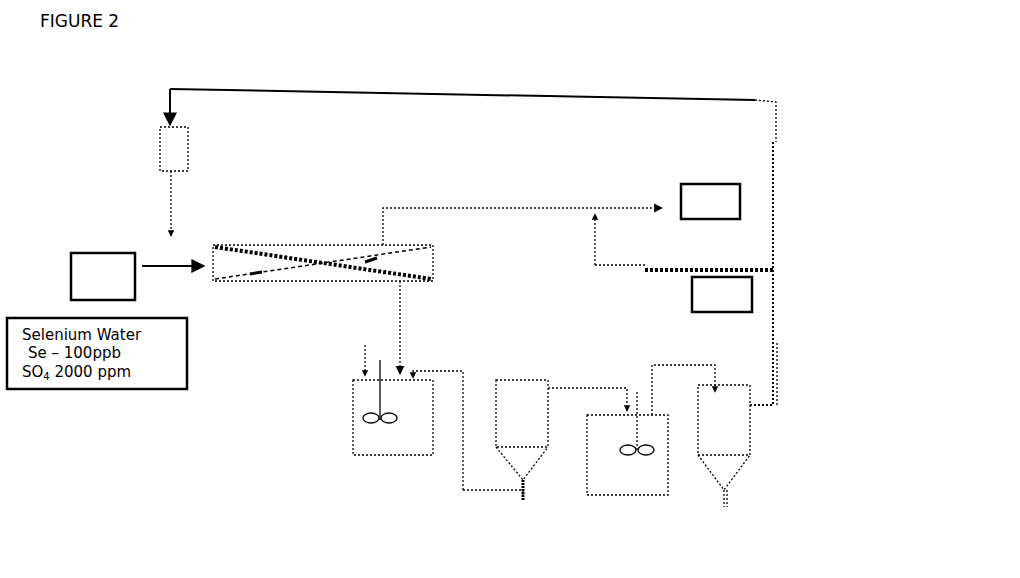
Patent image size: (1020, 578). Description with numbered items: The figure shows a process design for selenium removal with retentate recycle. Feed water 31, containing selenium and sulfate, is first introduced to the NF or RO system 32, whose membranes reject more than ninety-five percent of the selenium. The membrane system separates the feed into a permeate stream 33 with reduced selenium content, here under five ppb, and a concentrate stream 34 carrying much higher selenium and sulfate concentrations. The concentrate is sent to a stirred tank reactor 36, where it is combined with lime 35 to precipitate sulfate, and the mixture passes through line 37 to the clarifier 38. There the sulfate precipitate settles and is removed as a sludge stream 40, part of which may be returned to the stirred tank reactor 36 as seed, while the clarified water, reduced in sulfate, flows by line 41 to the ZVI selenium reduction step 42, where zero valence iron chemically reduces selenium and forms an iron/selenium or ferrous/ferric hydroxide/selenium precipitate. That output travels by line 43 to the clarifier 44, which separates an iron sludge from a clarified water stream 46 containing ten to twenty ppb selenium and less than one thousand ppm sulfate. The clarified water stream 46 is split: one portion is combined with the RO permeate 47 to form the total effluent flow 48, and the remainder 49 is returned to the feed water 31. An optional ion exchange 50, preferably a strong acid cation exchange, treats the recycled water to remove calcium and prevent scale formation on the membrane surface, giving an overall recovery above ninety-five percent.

The feed water 31 is at (137, 276).
The NF or RO system 32 is at (437, 262).
The permeate stream 33 is at (518, 214).
The concentrate stream 34 is at (456, 327).
The lime 35 is at (345, 353).
The stirred tank reactor 36 is at (388, 460).
The line 37 is at (462, 455).
The clarifier 38 is at (533, 440).
The sludge stream 40 is at (520, 517).
The line 41 is at (587, 393).
The ZVI selenium reduction step 42 is at (623, 497).
The line 43 is at (683, 377).
The clarifier 44 is at (755, 452).
The clarified water stream 46 is at (777, 377).
The RO permeate 47 is at (684, 263).
The total effluent flow 48 is at (710, 201).
The remainder 49 is at (490, 247).
The ion exchange 50 is at (195, 181).